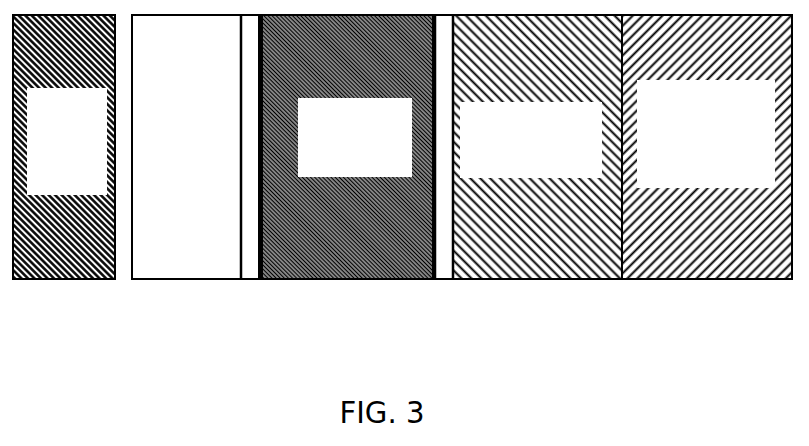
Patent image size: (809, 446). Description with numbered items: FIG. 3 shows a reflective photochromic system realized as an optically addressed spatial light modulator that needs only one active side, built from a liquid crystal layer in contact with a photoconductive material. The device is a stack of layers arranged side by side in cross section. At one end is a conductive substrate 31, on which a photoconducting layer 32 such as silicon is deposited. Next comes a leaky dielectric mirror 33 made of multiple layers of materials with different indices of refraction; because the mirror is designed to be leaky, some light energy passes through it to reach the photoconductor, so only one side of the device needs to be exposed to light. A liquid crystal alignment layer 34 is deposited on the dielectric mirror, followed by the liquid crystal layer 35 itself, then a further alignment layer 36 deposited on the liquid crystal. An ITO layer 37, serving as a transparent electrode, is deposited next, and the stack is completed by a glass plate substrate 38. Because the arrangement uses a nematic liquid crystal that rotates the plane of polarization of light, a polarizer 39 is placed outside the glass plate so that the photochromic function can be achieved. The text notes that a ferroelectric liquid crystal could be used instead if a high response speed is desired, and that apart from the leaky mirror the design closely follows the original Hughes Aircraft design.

The conductive substrate 31 is at (707, 280).
The photoconducting layer 32 is at (545, 280).
The leaky dielectric mirror 33 is at (442, 280).
The liquid crystal alignment layer 34 is at (397, 280).
The liquid crystal layer 35 is at (330, 280).
The alignment layer 36 is at (265, 280).
The ITO layer 37 is at (248, 280).
The glass plate substrate 38 is at (152, 280).
The polarizers 39 is at (32, 280).